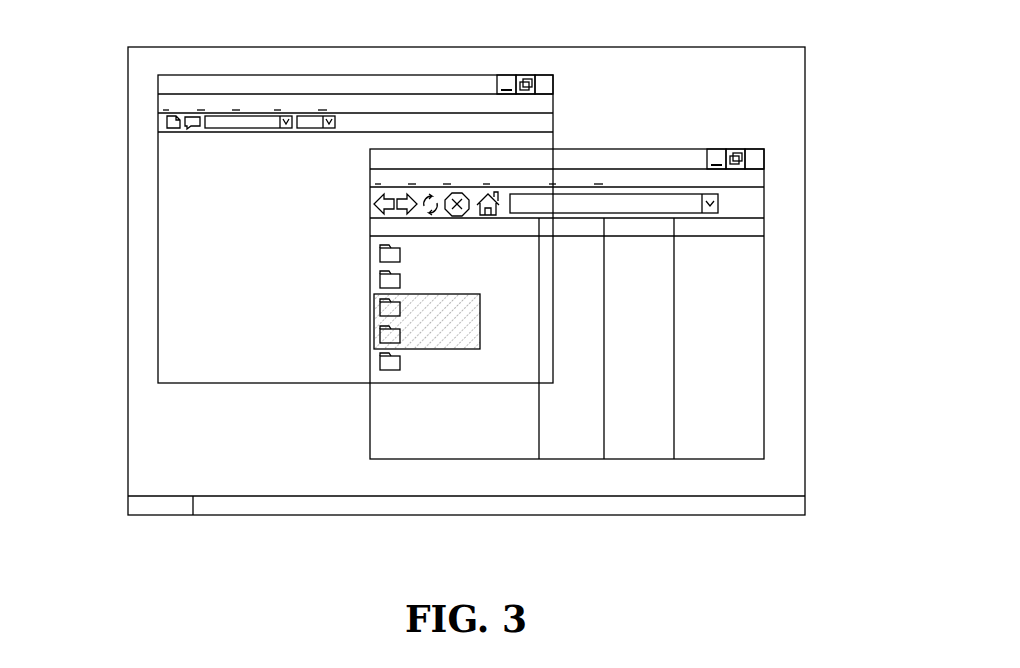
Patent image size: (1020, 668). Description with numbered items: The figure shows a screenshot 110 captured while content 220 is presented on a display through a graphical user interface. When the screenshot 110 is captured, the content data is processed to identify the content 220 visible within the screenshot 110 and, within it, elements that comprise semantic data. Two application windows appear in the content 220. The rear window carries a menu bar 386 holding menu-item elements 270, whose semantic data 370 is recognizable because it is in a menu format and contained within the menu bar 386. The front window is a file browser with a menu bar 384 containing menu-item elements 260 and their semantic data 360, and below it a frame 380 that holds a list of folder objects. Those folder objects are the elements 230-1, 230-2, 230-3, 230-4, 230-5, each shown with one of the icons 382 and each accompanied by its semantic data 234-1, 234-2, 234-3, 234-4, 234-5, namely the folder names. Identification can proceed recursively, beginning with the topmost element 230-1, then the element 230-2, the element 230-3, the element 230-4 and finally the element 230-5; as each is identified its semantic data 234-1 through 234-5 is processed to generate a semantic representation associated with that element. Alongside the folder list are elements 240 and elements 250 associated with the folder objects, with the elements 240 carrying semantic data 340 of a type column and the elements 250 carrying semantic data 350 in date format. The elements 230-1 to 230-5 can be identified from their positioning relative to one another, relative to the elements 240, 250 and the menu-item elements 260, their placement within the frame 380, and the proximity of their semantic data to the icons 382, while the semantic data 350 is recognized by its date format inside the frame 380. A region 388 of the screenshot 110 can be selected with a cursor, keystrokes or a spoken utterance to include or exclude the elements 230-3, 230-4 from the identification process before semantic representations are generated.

The screenshot 110 is at (127, 65).
The content 220 is at (708, 98).
The semantic data 370 is at (146, 103).
The menu bar 386 is at (361, 97).
The elements (menu items) 270 is at (325, 107).
The semantic data 360 is at (358, 178).
The menu bar 384 is at (757, 177).
The elements (menu items) 260 is at (397, 174).
The frame 380 is at (765, 207).
The icons 382 is at (391, 388).
The semantic data 340 is at (632, 385).
The semantic data 350 is at (713, 385).
The region 388 is at (426, 351).
The first element 230-1 is at (378, 255).
The element 230-2 is at (378, 281).
The element 230-3 is at (378, 309).
The element 230-4 is at (378, 336).
The element 230-5 is at (378, 363).
The semantic data 234-1 is at (450, 255).
The semantic data 234-2 is at (472, 281).
The semantic data 234-3 is at (474, 309).
The semantic data 234-4 is at (462, 336).
The semantic data 234-5 is at (467, 363).
The elements 240 is at (608, 255).
The elements 250 is at (737, 255).